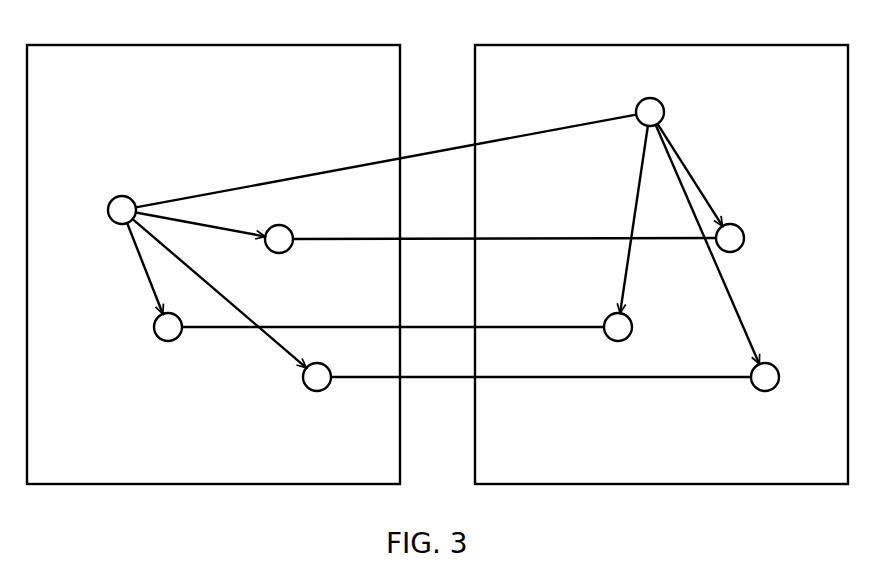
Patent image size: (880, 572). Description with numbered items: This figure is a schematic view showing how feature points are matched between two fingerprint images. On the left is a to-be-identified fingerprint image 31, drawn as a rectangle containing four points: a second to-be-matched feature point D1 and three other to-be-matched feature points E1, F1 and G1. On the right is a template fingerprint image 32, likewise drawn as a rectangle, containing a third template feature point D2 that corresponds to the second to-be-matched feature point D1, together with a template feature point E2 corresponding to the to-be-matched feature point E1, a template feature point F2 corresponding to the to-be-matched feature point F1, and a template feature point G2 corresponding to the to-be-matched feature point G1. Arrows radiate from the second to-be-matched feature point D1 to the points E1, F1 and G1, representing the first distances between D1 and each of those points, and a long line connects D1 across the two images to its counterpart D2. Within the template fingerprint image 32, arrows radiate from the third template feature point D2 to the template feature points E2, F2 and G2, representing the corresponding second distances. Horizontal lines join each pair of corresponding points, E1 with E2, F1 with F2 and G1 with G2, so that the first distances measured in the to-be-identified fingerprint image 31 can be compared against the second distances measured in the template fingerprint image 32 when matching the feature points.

The to-be-identified fingerprint image 31 is at (232, 44).
The template fingerprint image 32 is at (650, 44).
The second to-be-matched feature point D1 is at (122, 200).
The to-be-matched feature point E1 is at (279, 229).
The to-be-matched feature point F1 is at (168, 337).
The to-be-matched feature point G1 is at (317, 388).
The third template feature point D2 is at (650, 102).
The template feature point E2 is at (732, 248).
The template feature point F2 is at (623, 336).
The template feature point G2 is at (765, 388).